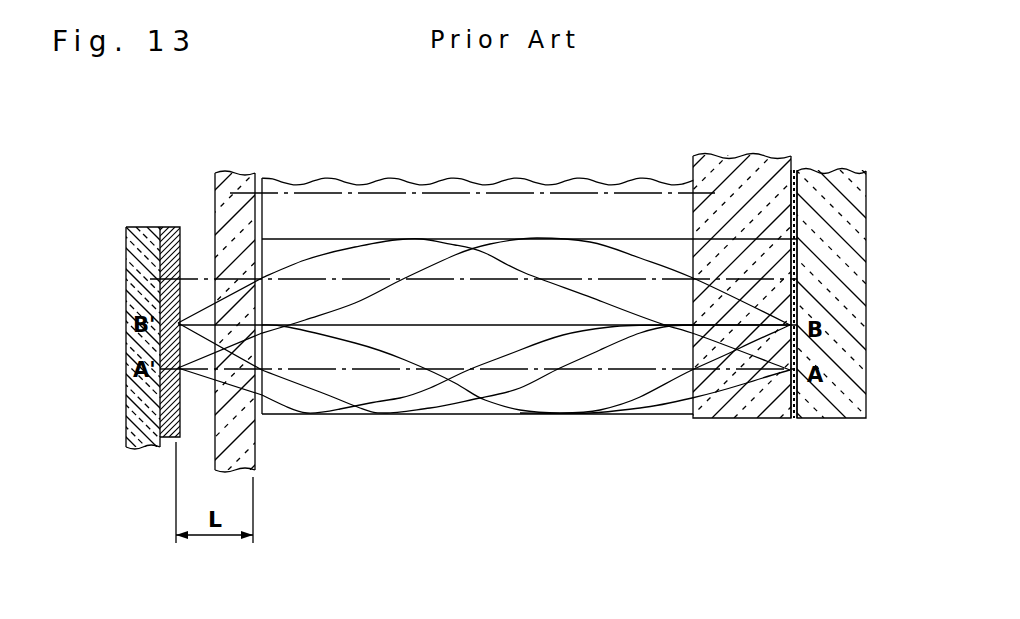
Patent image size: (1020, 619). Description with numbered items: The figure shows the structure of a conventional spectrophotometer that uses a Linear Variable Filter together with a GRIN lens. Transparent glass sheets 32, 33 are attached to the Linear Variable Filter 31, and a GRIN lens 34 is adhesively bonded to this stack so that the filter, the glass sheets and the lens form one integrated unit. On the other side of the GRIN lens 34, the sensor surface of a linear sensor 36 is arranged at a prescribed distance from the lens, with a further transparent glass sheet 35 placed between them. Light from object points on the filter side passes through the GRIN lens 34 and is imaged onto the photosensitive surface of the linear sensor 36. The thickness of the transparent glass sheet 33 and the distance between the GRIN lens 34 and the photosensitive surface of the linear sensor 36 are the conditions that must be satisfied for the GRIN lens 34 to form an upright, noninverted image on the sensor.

The Linear Variable Filter 31 is at (795, 170).
The transparent glass sheet 32 is at (847, 177).
The transparent glass sheet 33 is at (738, 163).
The GRIN lens 34 is at (487, 217).
The transparent glass sheet 35 is at (240, 178).
The linear sensor 36 is at (128, 425).